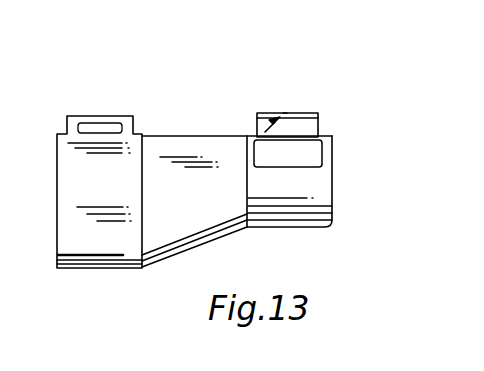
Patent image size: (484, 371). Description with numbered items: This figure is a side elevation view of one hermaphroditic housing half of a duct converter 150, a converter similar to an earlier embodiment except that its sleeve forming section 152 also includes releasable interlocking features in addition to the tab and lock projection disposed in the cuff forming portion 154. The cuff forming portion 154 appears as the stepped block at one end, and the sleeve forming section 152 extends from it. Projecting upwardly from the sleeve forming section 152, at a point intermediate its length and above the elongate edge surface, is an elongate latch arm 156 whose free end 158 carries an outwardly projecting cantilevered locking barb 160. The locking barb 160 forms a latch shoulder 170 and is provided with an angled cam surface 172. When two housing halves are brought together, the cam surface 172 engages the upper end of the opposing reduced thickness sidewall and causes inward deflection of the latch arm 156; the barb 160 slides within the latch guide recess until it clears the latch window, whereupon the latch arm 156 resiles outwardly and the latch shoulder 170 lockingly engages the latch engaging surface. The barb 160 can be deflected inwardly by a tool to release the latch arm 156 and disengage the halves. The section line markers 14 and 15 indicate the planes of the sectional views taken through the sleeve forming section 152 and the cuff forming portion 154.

The hermaphroditic duct converter 150 is at (172, 82).
The sleeve forming section 152 is at (332, 208).
The cuff forming portion 154 is at (125, 266).
The latch arm 156 is at (308, 128).
The free end 158 is at (312, 112).
The locking barb 160 is at (258, 113).
The latch shoulder 170 is at (246, 136).
The angled cam surface 172 is at (285, 113).
The section line 14- 14 is at (282, 80).
The section line 15- 15 is at (105, 78).